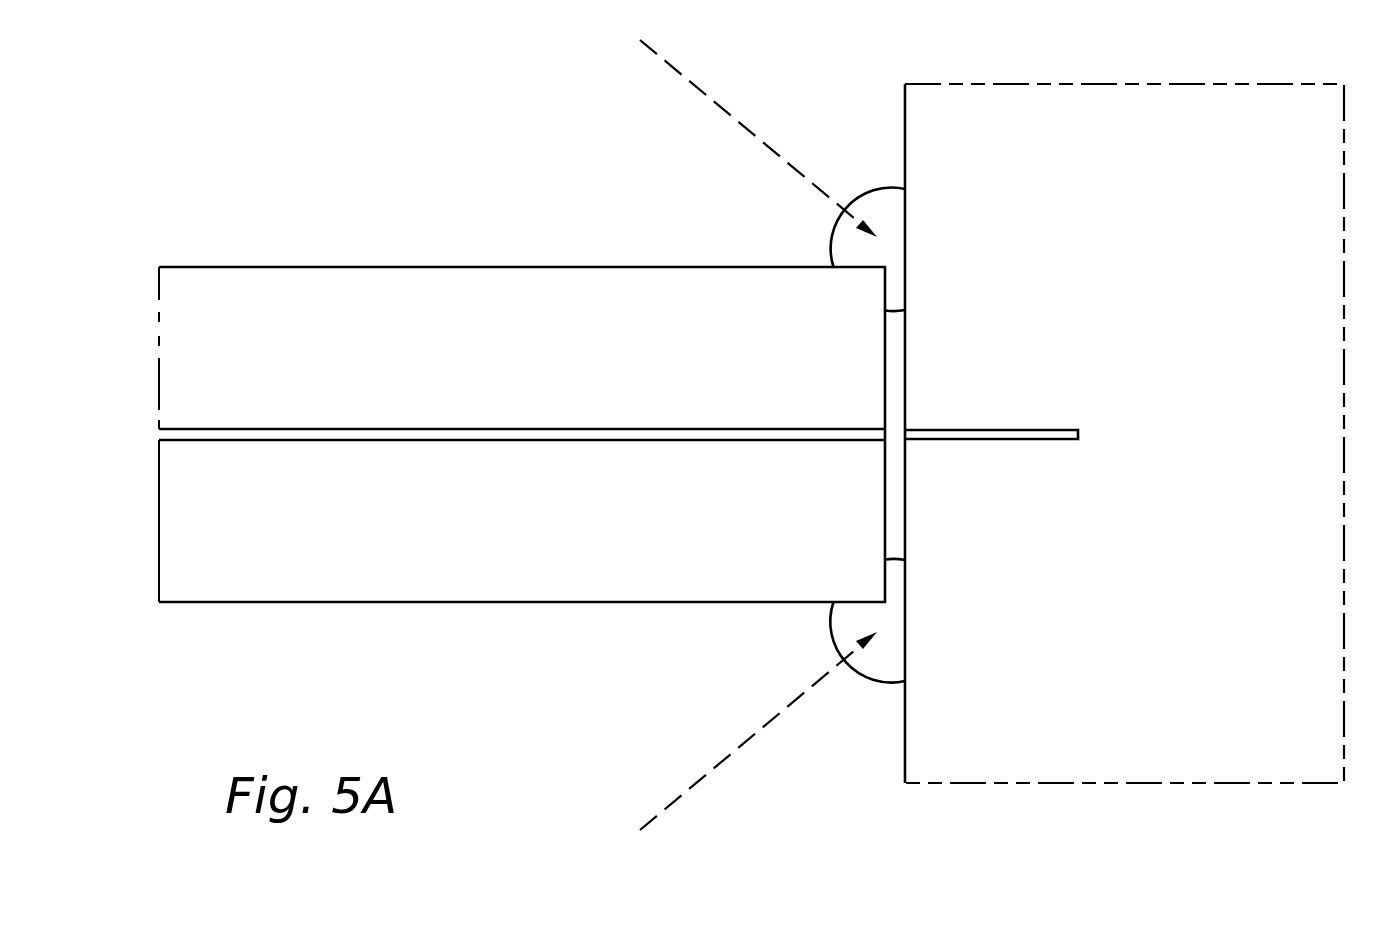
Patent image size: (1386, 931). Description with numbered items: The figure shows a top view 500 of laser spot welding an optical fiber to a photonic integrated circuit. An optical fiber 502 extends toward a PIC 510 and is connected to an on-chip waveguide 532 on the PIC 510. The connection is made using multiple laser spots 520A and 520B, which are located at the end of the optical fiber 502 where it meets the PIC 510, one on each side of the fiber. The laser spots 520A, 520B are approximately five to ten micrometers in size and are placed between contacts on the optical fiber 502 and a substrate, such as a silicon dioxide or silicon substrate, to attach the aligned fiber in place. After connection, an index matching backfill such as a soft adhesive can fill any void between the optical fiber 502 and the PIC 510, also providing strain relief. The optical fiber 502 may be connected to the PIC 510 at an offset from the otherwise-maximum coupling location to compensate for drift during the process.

The top view 500 is at (277, 80).
The optical fiber 502 is at (468, 267).
The PIC 510 is at (905, 720).
The laser spot 520A is at (838, 238).
The laser spot 520B is at (840, 638).
The on-chip waveguide 532 is at (1053, 430).